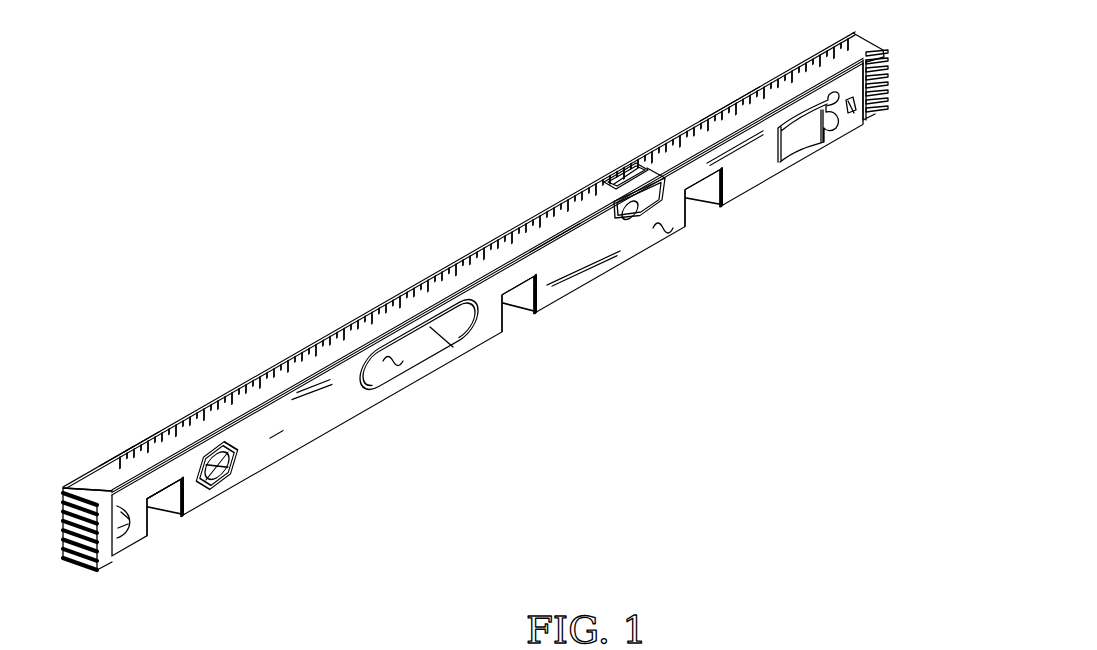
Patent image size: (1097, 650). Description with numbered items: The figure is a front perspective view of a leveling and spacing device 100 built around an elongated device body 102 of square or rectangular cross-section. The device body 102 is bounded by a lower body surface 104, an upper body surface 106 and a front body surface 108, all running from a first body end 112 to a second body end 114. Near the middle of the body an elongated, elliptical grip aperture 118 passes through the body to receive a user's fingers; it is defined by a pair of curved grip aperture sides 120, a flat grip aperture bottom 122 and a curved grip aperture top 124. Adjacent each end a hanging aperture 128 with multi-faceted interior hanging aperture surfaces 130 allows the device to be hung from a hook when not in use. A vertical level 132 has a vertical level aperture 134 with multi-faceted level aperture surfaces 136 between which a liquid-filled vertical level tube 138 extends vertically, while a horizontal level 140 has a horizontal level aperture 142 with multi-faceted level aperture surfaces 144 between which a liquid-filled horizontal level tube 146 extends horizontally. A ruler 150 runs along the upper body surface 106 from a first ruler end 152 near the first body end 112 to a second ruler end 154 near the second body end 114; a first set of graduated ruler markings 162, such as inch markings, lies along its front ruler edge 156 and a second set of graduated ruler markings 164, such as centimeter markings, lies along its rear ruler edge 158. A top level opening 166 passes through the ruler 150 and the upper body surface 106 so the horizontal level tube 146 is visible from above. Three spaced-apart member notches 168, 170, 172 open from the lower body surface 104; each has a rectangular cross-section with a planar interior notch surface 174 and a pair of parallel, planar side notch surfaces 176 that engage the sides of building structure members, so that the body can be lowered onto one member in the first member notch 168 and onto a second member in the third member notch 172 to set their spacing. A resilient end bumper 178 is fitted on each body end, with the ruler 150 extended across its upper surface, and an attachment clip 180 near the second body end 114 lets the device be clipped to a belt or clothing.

The leveling and spacing device 100 is at (304, 181).
The device body 102 is at (335, 446).
The lower body surface 104 is at (597, 277).
The upper body surface 106 is at (462, 262).
The front body surface 108 is at (672, 232).
The first body end 112 is at (108, 565).
The second body end 114 is at (872, 118).
The grip aperture 118 is at (436, 362).
The grip aperture sides 120 is at (398, 393).
The grip aperture bottom 122 is at (388, 350).
The grip aperture top 124 is at (433, 290).
The hanging aperture 128 is at (119, 503).
The interior hanging aperture surfaces 130 is at (126, 534).
The vertical level 132 is at (236, 437).
The vertical level aperture 134 is at (226, 492).
The level aperture surfaces 136 is at (243, 473).
The vertical level tube 138 is at (212, 440).
The horizontal level 140 is at (616, 216).
The horizontal level aperture 142 is at (624, 238).
The level aperture surfaces 144 is at (641, 222).
The horizontal level tube 146 is at (622, 163).
The ruler 150 is at (118, 452).
The first ruler end 152 is at (62, 486).
The second ruler end 154 is at (843, 37).
The front ruler edge 156 is at (551, 244).
The rear ruler edge 158 is at (733, 101).
The first set of graduated ruler markings 162 is at (282, 432).
The second set of graduated ruler markings 164 is at (344, 325).
The top level opening 166 is at (606, 184).
The first member notch 168 is at (162, 527).
The member notch 170 is at (516, 323).
The third member notch 172 is at (152, 535).
The interior notch surface 174 is at (128, 440).
The side notch surfaces 176 is at (184, 512).
The end bumper 178 is at (66, 562).
The attachment clip 180 is at (797, 125).